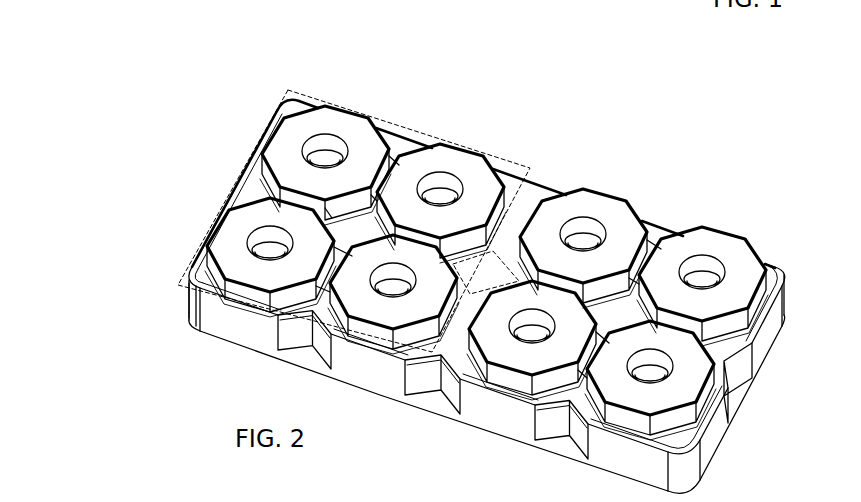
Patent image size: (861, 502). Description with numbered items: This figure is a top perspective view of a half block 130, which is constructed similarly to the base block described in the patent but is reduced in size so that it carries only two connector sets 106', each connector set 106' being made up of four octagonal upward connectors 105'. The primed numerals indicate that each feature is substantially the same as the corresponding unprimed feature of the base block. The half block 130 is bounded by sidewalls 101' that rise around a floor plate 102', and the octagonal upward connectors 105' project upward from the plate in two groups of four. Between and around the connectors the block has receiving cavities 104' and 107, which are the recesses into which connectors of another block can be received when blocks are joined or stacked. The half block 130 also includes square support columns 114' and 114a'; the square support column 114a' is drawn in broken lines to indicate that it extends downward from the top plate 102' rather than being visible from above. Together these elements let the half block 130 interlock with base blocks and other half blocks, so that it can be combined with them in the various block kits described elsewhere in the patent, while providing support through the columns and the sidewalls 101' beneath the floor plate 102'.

The half block 130 is at (270, 78).
The octagonal upward connector 105' is at (343, 135).
The connector set 106' is at (440, 164).
The square support column 114' is at (422, 193).
The floor plate 102' is at (487, 297).
The square support column 114a' is at (541, 220).
The sidewalls 101' is at (115, 315).
The receiving cavity 104' is at (403, 296).
The receiving cavity 107 is at (470, 330).